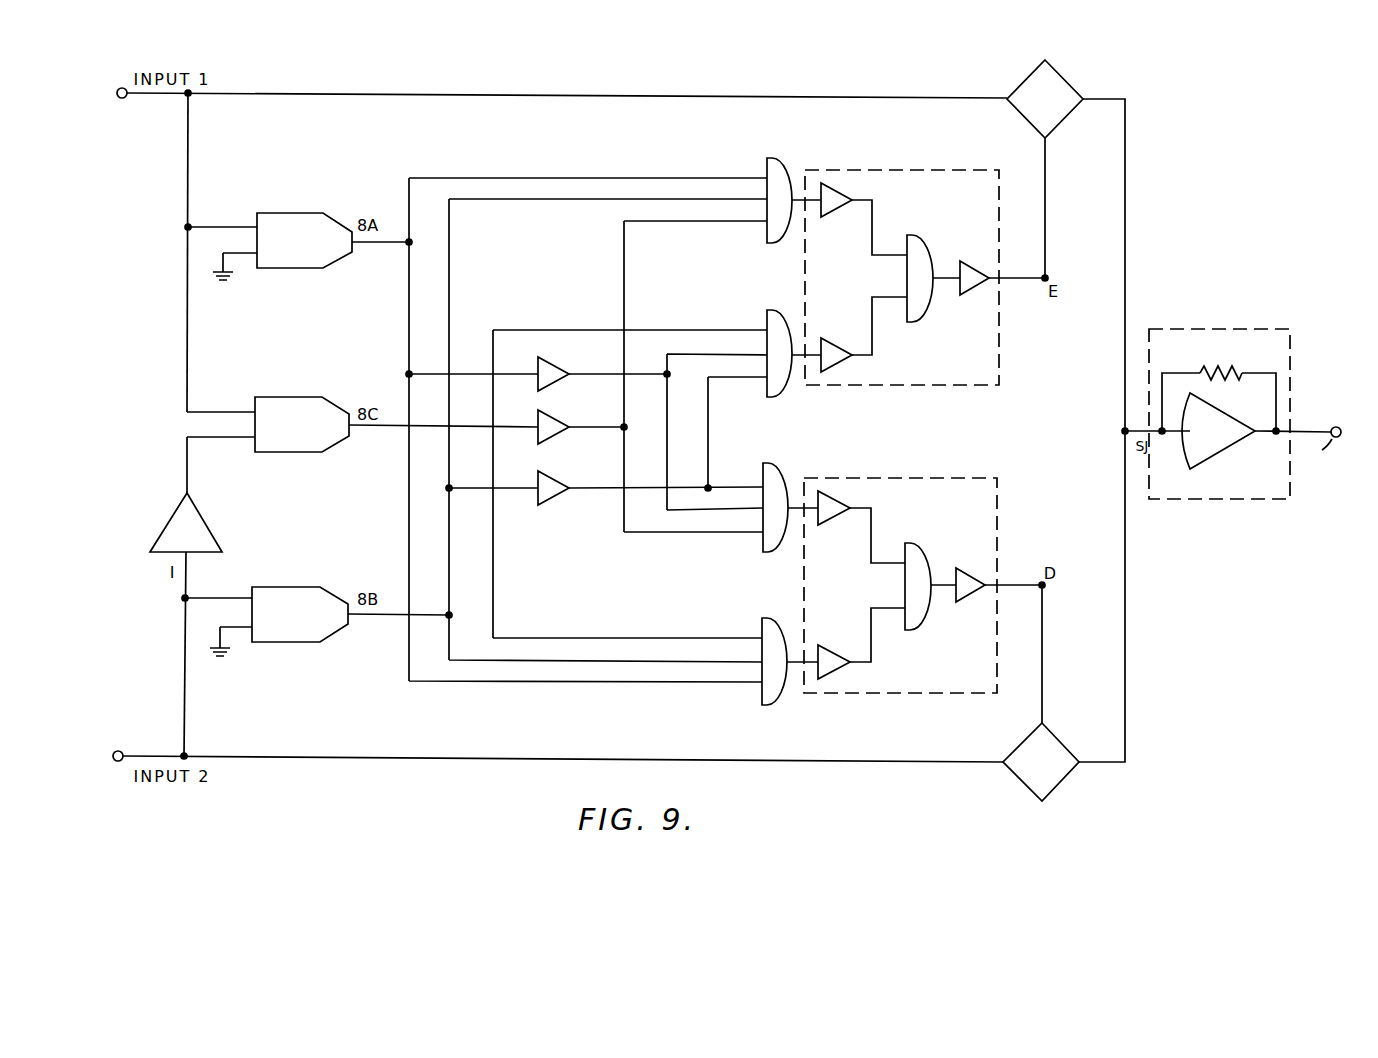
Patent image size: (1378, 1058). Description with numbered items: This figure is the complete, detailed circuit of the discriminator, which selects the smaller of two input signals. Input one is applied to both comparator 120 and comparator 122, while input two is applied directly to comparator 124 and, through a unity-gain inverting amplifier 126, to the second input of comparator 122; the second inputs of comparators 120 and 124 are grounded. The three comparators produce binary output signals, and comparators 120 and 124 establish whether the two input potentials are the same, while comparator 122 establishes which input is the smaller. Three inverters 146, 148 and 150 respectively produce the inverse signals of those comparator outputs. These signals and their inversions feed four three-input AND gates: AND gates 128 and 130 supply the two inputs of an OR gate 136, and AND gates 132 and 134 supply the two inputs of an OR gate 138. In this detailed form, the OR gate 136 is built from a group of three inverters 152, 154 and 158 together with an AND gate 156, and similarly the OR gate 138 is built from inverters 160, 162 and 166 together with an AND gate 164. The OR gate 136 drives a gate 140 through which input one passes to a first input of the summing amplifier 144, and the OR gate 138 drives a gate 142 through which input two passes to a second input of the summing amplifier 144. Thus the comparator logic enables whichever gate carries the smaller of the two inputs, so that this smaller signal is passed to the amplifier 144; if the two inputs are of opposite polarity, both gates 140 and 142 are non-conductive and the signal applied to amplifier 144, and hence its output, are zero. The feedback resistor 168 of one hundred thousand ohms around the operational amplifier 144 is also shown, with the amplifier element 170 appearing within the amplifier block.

The comparator 120 is at (310, 218).
The comparator 122 is at (311, 403).
The comparator 124 is at (307, 593).
The inverting amplifier 126 is at (203, 518).
The AND gate 128 is at (790, 160).
The AND gate 130 is at (767, 316).
The AND gate 132 is at (786, 465).
The AND gate 134 is at (762, 625).
The OR gate 136 is at (920, 170).
The OR gate 138 is at (935, 478).
The gate 140 is at (1012, 108).
The gate 142 is at (1018, 745).
The summing amplifier 144 is at (1262, 328).
The inverter 146 is at (557, 377).
The inverter 148 is at (557, 432).
The inverter 150 is at (557, 492).
The inverter 152 is at (830, 210).
The inverter 154 is at (852, 357).
The AND gate 156 is at (928, 240).
The inverter 158 is at (972, 283).
The inverter 160 is at (828, 515).
The inverter 162 is at (848, 667).
The AND gate 164 is at (925, 548).
The inverter 166 is at (968, 590).
The feedback resistor 168 is at (1228, 383).
The operational amplifier 170 is at (1212, 460).